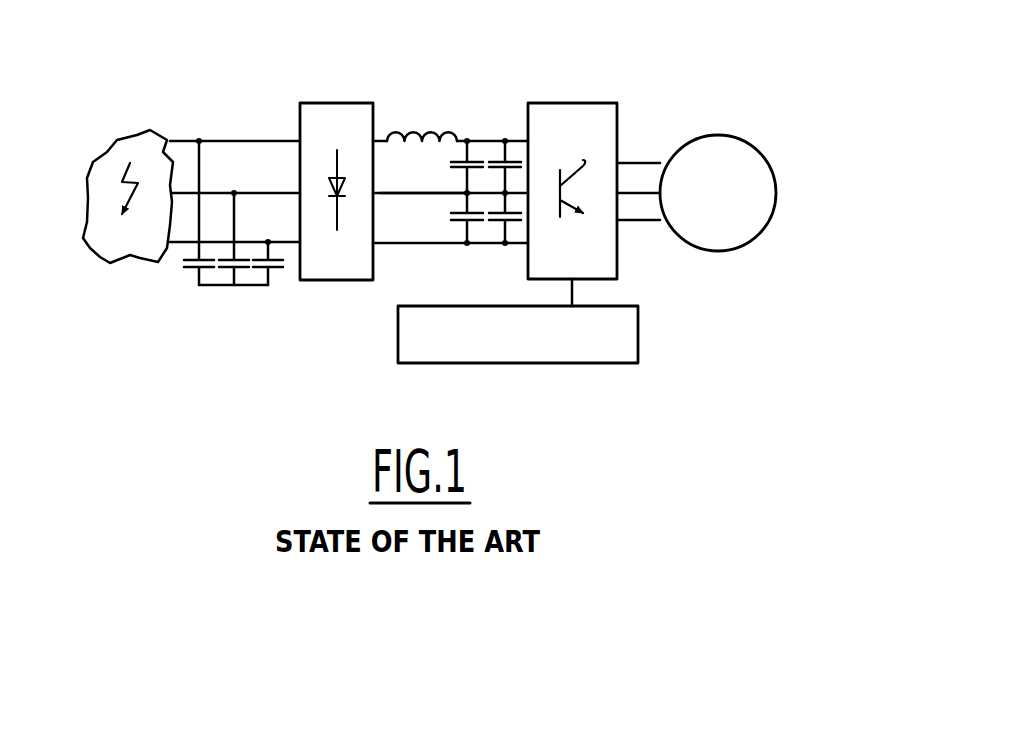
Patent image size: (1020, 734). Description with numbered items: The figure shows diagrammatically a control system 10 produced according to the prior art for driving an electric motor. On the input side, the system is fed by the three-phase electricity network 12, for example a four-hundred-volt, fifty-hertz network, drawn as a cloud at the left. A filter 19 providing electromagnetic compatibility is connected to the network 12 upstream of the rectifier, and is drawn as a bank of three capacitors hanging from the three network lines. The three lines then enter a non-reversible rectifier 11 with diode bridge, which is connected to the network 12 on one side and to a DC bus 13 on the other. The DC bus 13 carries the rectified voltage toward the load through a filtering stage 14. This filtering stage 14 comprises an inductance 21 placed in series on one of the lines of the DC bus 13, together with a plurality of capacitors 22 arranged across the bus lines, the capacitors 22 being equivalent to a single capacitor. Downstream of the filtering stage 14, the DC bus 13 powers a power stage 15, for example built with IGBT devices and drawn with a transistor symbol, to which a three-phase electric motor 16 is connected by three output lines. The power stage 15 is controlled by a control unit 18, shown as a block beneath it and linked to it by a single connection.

The control system 10 is at (155, 100).
The non-reversible rectifier 11 is at (337, 117).
The three-phase electricity network 12 is at (148, 238).
The DC bus 13 is at (394, 233).
The filtering stage 14 is at (487, 120).
The power stage 15 is at (572, 113).
The three-phase electric motor 16 is at (717, 152).
The control unit 18 is at (415, 323).
The filter 19 is at (220, 287).
The inductance 21 is at (407, 123).
The capacitors 22 is at (463, 148).